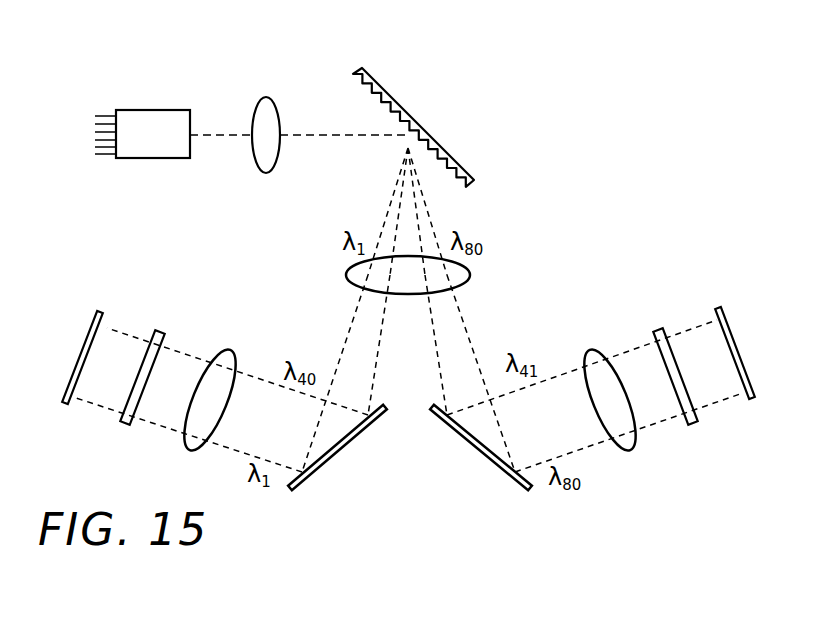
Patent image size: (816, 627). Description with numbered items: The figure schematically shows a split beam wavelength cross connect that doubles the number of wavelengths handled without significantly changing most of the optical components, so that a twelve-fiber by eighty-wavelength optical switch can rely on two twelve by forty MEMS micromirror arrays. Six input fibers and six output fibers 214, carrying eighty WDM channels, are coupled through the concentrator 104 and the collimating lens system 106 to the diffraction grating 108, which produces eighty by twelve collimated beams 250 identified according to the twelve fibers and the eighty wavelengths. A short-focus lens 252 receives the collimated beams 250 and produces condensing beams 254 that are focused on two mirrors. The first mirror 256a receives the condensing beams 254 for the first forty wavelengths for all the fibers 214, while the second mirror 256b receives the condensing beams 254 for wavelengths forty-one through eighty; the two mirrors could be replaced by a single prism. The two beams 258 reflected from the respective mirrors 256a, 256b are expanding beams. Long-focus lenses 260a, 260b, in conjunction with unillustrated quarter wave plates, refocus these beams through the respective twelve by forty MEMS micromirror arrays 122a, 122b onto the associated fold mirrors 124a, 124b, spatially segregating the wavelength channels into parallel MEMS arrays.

The input and output fibers 214 is at (108, 110).
The concentrator 104 is at (168, 122).
The collimating lens system 106 is at (269, 103).
The diffraction grating 108 is at (373, 88).
The collimated beams 250 is at (435, 206).
The short-focus lens 252 is at (352, 262).
The condensing beams 254 is at (485, 337).
The reflected beams 258 is at (556, 379).
The first mirror 256a is at (330, 462).
The second mirror 256b is at (490, 462).
The long-focus lens 260a is at (223, 358).
The long-focus lens 260b is at (600, 355).
The MEMS micromirror array 122a is at (149, 331).
The MEMS micromirror array 122b is at (670, 329).
The fold mirror 124a is at (96, 311).
The fold mirror 124b is at (718, 307).